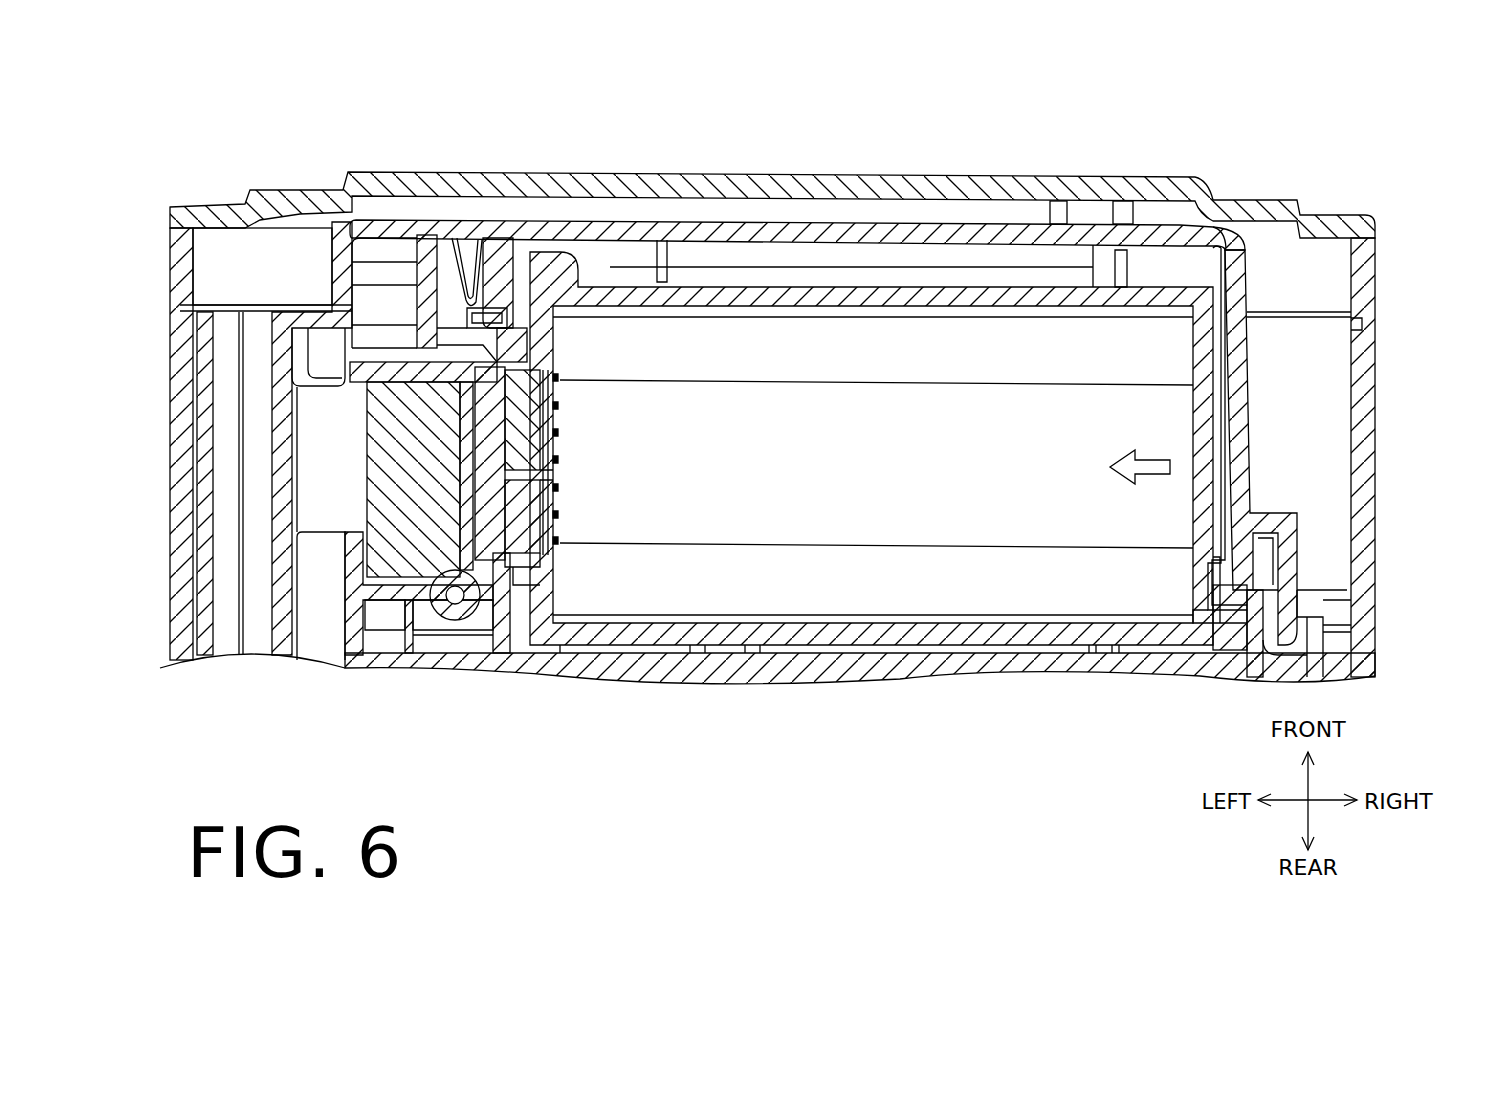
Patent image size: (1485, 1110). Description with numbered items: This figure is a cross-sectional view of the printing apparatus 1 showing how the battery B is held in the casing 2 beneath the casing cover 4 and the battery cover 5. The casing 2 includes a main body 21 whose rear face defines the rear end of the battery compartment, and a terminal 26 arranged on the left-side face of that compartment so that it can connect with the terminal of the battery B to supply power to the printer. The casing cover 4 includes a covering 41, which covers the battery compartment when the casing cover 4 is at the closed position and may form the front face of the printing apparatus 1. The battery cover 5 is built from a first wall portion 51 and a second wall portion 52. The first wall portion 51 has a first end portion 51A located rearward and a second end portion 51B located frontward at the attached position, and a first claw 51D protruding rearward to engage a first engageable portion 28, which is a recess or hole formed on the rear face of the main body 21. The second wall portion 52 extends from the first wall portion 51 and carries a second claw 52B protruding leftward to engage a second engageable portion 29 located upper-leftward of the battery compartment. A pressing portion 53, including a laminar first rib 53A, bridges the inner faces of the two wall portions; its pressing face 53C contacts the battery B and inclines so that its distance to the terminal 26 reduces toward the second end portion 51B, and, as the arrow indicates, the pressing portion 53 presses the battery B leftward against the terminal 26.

The printing apparatus 1 is at (204, 104).
The casing 2 is at (733, 453).
The casing cover 4 is at (772, 381).
The battery cover 5 is at (1224, 228).
The main body 21 is at (185, 450).
The terminal 26 is at (557, 360).
The first engageable portion 28 is at (1303, 603).
The second engageable portion 29 is at (447, 232).
The covering 41 is at (853, 188).
The first wall portion 51 is at (1327, 456).
The first end portion 51A is at (1300, 543).
The second end portion 51B is at (1250, 266).
The first claw 51D is at (1313, 633).
The second wall portion 52 is at (797, 216).
The second claw 52B is at (426, 240).
The pressing portion 53 is at (1247, 424).
The first rib 53A is at (1223, 463).
The pressing face 53C is at (1210, 481).
The battery B is at (960, 292).